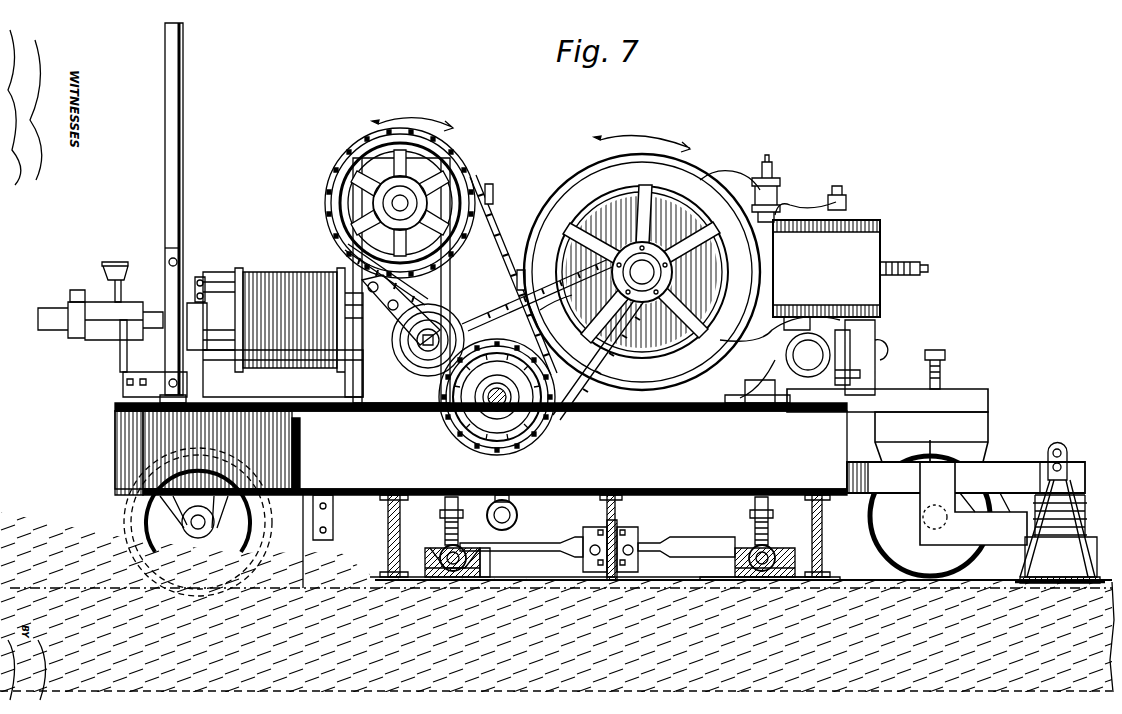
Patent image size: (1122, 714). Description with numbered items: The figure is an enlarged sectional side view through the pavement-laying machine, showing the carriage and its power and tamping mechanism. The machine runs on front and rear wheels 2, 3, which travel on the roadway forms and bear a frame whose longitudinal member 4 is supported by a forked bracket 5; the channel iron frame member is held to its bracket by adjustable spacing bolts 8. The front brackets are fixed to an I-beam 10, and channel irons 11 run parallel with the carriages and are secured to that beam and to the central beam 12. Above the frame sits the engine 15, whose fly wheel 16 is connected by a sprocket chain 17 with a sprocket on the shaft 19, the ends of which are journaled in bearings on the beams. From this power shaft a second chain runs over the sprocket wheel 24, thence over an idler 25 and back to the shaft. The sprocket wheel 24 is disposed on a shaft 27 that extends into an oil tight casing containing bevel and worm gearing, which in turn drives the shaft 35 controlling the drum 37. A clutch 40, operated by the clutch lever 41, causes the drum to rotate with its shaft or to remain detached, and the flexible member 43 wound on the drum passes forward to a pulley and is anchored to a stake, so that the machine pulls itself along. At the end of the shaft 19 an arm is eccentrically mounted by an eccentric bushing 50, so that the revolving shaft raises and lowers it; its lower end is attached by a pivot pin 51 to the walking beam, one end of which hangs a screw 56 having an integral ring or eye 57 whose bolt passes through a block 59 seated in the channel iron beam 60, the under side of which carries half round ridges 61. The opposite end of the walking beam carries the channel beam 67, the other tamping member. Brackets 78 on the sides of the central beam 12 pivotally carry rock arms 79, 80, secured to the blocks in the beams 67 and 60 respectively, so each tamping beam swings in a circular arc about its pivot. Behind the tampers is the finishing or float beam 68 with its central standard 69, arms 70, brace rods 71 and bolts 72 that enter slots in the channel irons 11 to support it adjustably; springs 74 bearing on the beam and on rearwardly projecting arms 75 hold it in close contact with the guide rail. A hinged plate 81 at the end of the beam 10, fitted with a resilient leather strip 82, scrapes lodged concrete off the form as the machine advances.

The front wheel 2 is at (125, 514).
The rear wheel 3 is at (930, 516).
The longitudinal frame member 4 is at (900, 388).
The forked bracket 5 is at (985, 432).
The adjustable spacing bolt 8 is at (942, 378).
The I-beam 10 is at (333, 527).
The channel iron 11 is at (966, 477).
The central beam 12 is at (617, 527).
The engine 15 is at (824, 276).
The fly wheel 16 is at (570, 175).
The sprocket chain 17 is at (552, 300).
The shaft 19 is at (449, 428).
The sprocket wheel 24 is at (368, 146).
The idler 25 is at (482, 190).
The shaft 27 is at (392, 204).
The shaft 35 is at (62, 340).
The drum 37 is at (312, 370).
The clutch 40 is at (200, 278).
The clutch lever 41 is at (183, 166).
The flexible member 43 is at (288, 275).
The eccentric bushing 50 is at (730, 552).
The pivot pin 51 is at (508, 505).
The screw 56 is at (778, 535).
The ring or eye 57 is at (440, 578).
The block 59 is at (447, 540).
The channel iron beam 60 is at (490, 580).
The half round ridge 61 is at (470, 580).
The channel beam 67 is at (735, 580).
The finishing or float beam 68 is at (1045, 588).
The central standard 69 is at (1053, 446).
The arm 70 is at (973, 504).
The brace rod 71 is at (1024, 477).
The bolt 72 is at (945, 477).
The spring 74 is at (1060, 531).
The arm 75 is at (1078, 528).
The bracket 78 is at (588, 530).
The rock arm 79 is at (690, 531).
The rock arm 80 is at (521, 556).
The hinged plate 81 is at (303, 545).
The resilient strip 82 is at (355, 488).